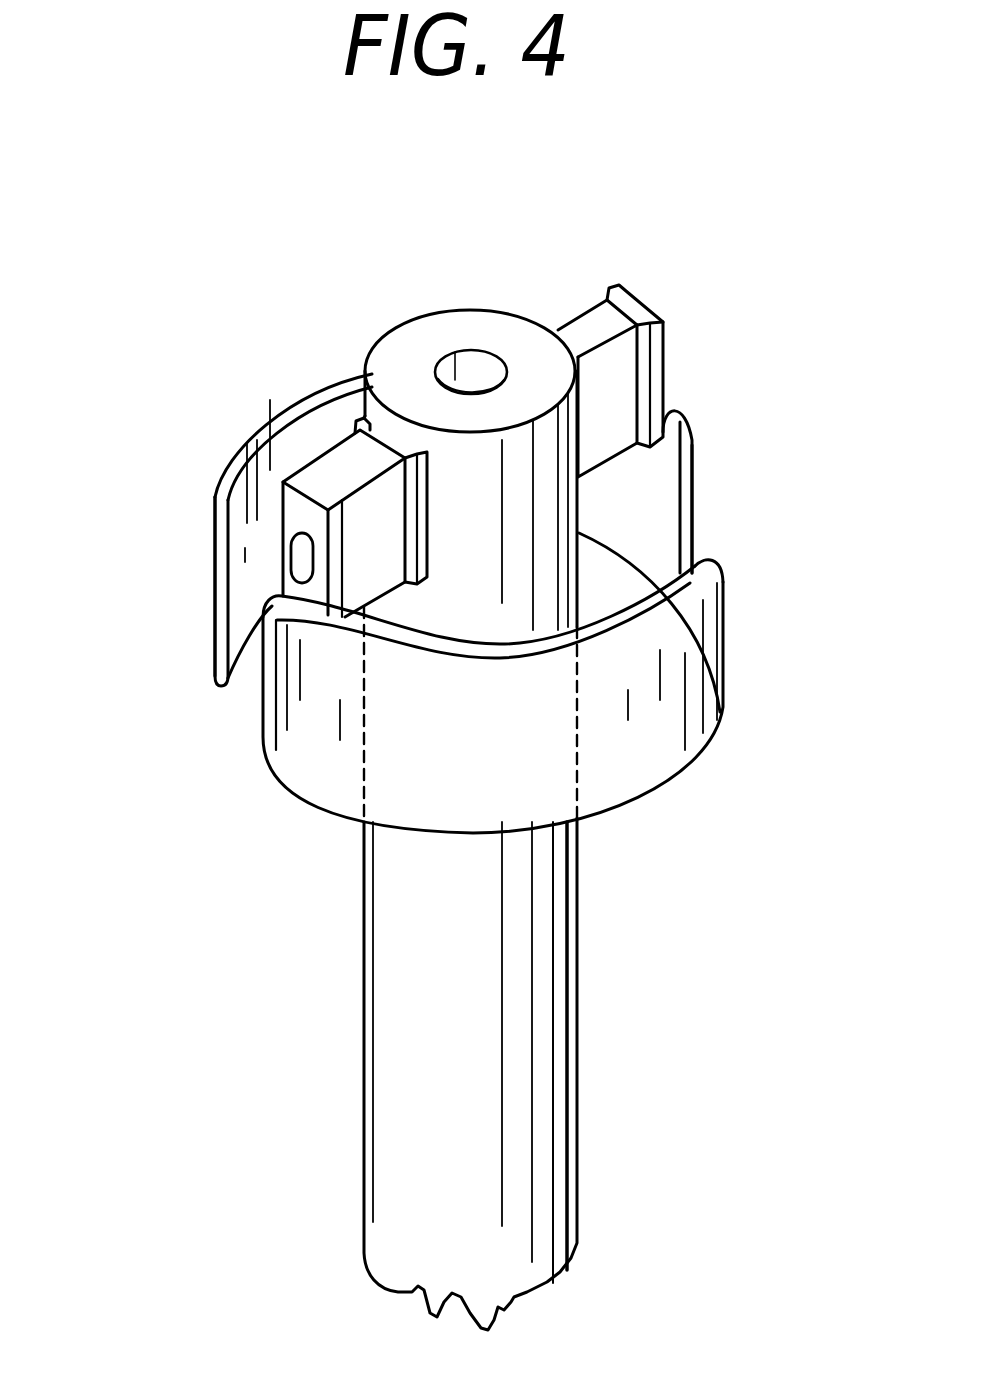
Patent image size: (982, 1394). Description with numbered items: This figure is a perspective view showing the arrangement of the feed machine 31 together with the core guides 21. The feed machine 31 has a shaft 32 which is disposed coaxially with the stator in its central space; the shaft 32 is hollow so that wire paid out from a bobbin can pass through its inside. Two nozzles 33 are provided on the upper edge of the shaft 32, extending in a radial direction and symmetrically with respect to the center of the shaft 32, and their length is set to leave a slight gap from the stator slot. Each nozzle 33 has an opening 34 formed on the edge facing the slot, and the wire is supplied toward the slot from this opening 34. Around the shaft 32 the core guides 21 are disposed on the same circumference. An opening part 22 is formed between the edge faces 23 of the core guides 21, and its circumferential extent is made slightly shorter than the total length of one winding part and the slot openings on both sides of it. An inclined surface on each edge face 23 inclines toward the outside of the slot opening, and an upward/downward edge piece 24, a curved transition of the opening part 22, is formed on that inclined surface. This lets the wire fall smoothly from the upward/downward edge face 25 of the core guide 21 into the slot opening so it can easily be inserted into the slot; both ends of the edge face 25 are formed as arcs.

The core guide 21 is at (725, 640).
The opening part 22 is at (252, 718).
The edge face 23 is at (222, 605).
The upward/downward edge piece 24 is at (228, 474).
The upward/downward edge face 25 is at (274, 410).
The feed machine 31 is at (578, 1091).
The shaft 32 is at (553, 1178).
The nozzle 33 is at (347, 470).
The opening 34 is at (300, 560).